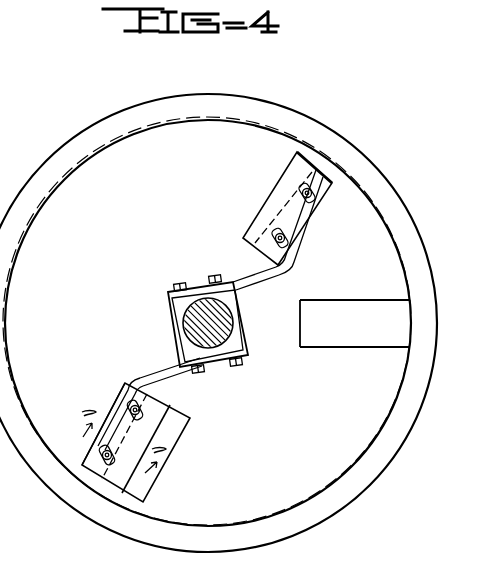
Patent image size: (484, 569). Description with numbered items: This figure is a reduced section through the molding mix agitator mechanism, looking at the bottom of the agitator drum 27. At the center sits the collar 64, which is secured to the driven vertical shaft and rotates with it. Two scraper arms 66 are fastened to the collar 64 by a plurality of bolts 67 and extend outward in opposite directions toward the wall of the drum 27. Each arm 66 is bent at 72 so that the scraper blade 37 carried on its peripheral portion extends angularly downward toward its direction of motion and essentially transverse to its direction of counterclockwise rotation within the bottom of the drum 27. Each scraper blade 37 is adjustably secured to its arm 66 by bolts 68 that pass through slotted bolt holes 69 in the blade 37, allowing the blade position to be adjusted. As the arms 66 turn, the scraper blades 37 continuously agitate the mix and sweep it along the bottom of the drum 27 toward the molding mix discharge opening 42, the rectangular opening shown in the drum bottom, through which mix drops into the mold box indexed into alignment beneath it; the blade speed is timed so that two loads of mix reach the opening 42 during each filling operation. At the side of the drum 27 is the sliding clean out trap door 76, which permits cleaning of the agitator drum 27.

The agitator drum 27 is at (170, 220).
The scraper blade 37 is at (274, 205).
The molding mix discharge opening 42 is at (183, 435).
The collar 64 is at (183, 325).
The scraper arm 66 is at (253, 278).
The bolt 67 is at (214, 275).
The bolt 68 is at (311, 225).
The slotted bolt hole 69 is at (312, 196).
The bend 72 is at (283, 268).
The sliding clean out trap door 76 is at (360, 334).